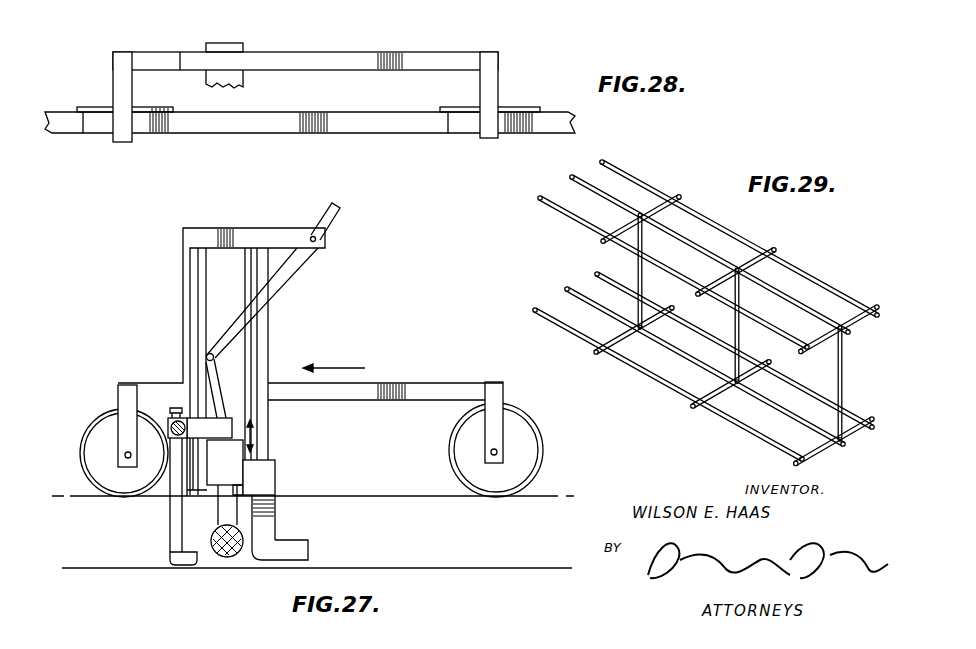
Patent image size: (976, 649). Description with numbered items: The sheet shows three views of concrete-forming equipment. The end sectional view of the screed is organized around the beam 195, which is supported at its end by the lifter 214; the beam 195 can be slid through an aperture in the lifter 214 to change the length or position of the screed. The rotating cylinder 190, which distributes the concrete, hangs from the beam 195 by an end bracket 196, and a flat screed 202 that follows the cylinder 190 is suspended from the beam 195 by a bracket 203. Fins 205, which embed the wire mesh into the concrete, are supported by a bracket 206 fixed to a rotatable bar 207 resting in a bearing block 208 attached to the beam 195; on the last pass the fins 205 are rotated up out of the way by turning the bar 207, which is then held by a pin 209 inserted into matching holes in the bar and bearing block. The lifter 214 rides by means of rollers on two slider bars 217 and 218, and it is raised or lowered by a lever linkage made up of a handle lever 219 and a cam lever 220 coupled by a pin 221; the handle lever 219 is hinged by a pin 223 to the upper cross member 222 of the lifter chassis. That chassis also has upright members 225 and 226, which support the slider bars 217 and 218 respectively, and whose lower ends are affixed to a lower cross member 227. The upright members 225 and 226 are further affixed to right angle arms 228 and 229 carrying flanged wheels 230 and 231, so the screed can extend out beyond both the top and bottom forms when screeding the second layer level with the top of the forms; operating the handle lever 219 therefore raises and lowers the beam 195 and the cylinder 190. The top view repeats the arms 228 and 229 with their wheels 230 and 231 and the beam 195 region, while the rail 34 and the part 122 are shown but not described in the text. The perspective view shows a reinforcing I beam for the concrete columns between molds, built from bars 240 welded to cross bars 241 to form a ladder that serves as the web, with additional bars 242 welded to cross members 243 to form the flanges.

In FIG. 28, the rail 34 is at (353, 123).
In FIG. 28, the cross bar 122 is at (285, 60).
In FIG. 27, the rotating cylinder 190 is at (227, 557).
In FIG. 28, the beam 195 is at (228, 43).
In FIG. 27, the beam 195 is at (242, 473).
In FIG. 27, the end bracket 196 is at (222, 517).
In FIG. 27, the flat screed 202 is at (297, 548).
In FIG. 27, the bracket 203 is at (267, 483).
In FIG. 27, the fin 205 is at (177, 558).
In FIG. 27, the bracket 206 is at (175, 535).
In FIG. 27, the rotatable bar 207 is at (168, 432).
In FIG. 27, the bearing block 208 is at (242, 460).
In FIG. 27, the pin 209 is at (173, 410).
In FIG. 27, the lifter 214 is at (240, 420).
In FIG. 27, the slider bar 217 is at (200, 292).
In FIG. 27, the slider bar 218 is at (251, 343).
In FIG. 27, the handle lever 219 is at (337, 215).
In FIG. 27, the cam lever 220 is at (212, 375).
In FIG. 27, the pin 221 is at (207, 355).
In FIG. 27, the upper cross member 222 is at (228, 230).
In FIG. 27, the pin 223 is at (318, 239).
In FIG. 27, the upright member 225 is at (183, 268).
In FIG. 27, the upright member 226 is at (268, 312).
In FIG. 27, the lower cross member 227 is at (200, 493).
In FIG. 28, the right angle arm 228 is at (120, 75).
In FIG. 27, the right angle arm 228 is at (120, 392).
In FIG. 28, the right angle arm 229 is at (487, 53).
In FIG. 27, the right angle arm 229 is at (430, 387).
In FIG. 28, the flanged wheel 230 is at (160, 126).
In FIG. 27, the flanged wheel 230 is at (92, 480).
In FIG. 28, the flanged wheel 231 is at (463, 123).
In FIG. 27, the flanged wheel 231 is at (448, 447).
In FIG. 29, the bar 240 is at (772, 290).
In FIG. 29, the cross bar 241 is at (643, 278).
In FIG. 29, the bar 242 is at (700, 216).
In FIG. 29, the cross member 243 is at (664, 197).